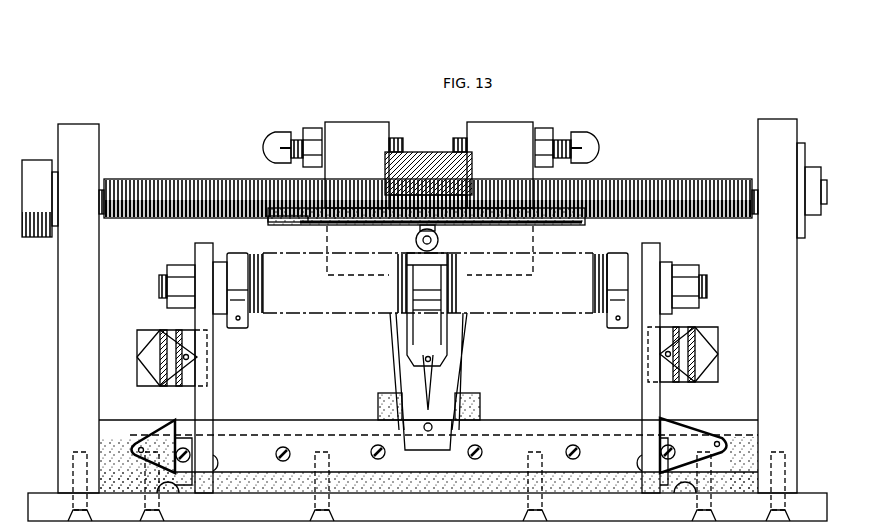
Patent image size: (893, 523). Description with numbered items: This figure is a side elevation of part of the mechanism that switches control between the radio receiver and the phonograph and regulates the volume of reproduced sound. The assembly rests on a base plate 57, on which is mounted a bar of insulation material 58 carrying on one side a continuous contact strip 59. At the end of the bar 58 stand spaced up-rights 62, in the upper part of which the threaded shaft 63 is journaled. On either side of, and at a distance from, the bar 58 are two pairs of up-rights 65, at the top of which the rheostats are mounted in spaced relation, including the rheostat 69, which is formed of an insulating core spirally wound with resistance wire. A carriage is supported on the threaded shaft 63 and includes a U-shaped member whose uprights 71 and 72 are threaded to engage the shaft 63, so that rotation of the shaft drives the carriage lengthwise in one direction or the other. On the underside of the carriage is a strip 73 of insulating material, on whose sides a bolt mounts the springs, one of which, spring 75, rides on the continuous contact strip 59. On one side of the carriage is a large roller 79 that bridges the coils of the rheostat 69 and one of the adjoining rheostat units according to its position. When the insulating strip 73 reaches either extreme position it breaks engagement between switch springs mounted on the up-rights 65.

The base plate 57 is at (427, 470).
The bar of insulation material 58 is at (118, 442).
The continuous contact strip 59 is at (425, 458).
The spaced up-rights 62 is at (424, 306).
The threaded shaft 63 is at (428, 187).
The up-rights 65 is at (213, 397).
The rheostat 69 is at (433, 290).
The upright of carriage 71 is at (333, 198).
The upright of carriage 72 is at (492, 198).
The strip of insulating material 73 is at (468, 375).
The spring 75 is at (458, 342).
The large roller 79 is at (415, 241).